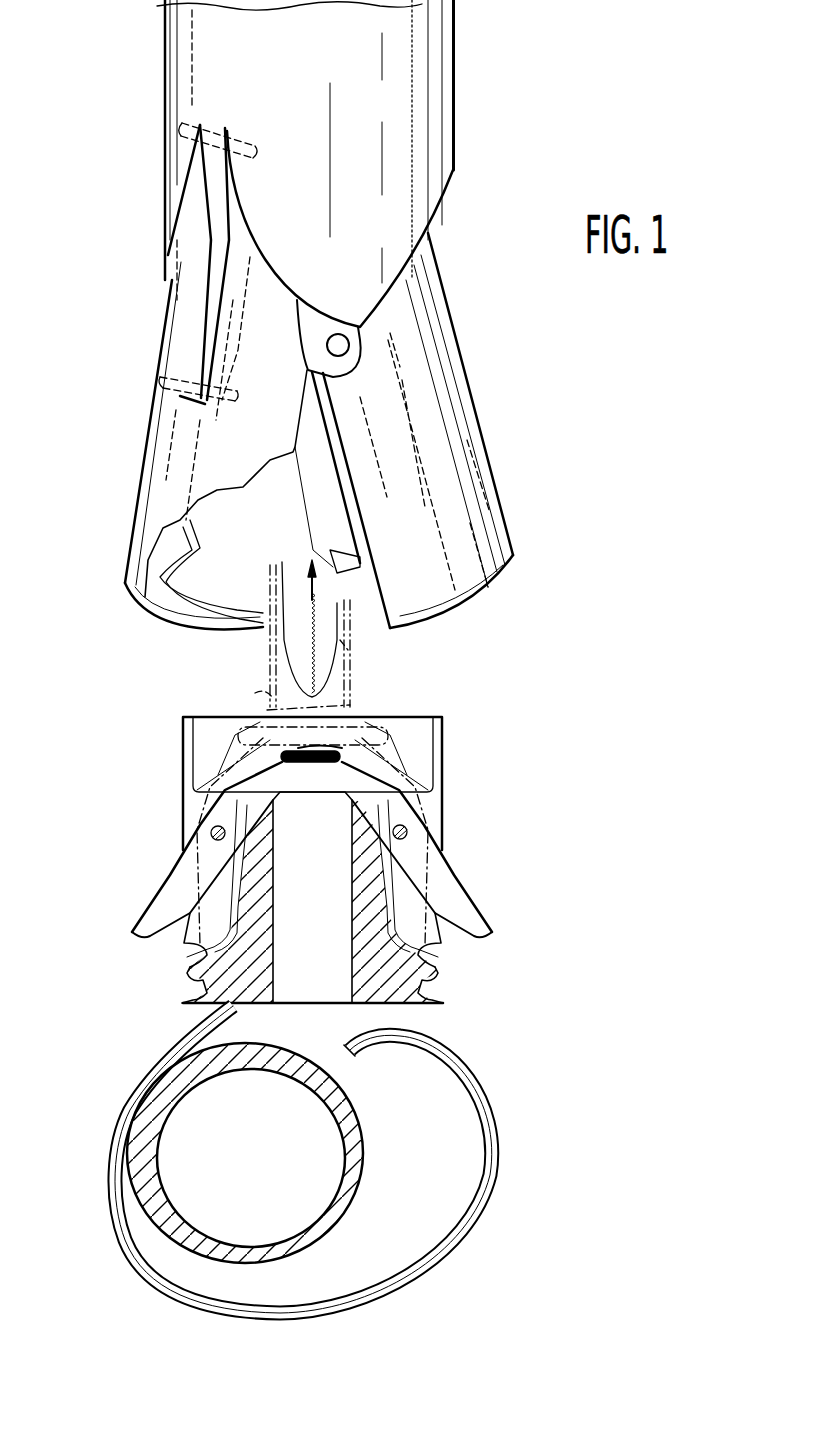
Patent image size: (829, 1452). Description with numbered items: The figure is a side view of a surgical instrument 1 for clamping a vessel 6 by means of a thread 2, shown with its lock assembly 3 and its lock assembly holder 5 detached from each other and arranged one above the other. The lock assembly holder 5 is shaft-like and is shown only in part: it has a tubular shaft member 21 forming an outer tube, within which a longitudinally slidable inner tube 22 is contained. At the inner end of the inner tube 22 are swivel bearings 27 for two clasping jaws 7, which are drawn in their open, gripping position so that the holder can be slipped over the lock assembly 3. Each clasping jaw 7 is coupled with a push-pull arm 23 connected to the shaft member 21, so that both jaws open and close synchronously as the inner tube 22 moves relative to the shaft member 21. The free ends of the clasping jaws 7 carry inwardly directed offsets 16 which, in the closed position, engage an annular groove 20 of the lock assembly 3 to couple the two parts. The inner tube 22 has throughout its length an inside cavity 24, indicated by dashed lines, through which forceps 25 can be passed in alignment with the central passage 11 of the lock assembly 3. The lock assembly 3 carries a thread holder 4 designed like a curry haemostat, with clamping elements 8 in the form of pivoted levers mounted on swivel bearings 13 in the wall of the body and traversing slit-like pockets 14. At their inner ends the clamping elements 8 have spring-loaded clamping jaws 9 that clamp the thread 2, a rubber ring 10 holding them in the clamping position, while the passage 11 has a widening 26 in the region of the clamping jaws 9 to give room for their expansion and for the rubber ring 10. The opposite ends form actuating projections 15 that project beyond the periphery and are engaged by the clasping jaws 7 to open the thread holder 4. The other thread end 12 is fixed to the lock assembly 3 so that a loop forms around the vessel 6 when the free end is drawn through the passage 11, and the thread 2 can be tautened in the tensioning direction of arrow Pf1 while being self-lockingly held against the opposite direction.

The surgical instrument 1 is at (505, 690).
The thread 2 is at (477, 1088).
The lock assembly 3 is at (153, 795).
The thread holder 4 is at (393, 743).
The lock assembly holder 5 is at (125, 272).
The vessel 6 is at (363, 1172).
The clasping jaws 7 is at (473, 467).
The clamping elements 8 is at (435, 798).
The clamping jaws 9 is at (325, 765).
The rubber ring 10 is at (373, 723).
The central passage 11 is at (313, 990).
The other thread end 12 is at (200, 1007).
The swivel bearings 13 is at (210, 832).
The slit-like pockets 14 is at (190, 952).
The actuating projections 15 is at (147, 917).
The offsets 16 is at (345, 548).
The annular groove 20 is at (437, 990).
The tubular shaft member 21 is at (185, 70).
The inner tube 22 is at (267, 658).
The push-pull arms 23 is at (192, 317).
The inside cavity 24 is at (255, 693).
The forceps 25 is at (353, 643).
The widening 26 is at (205, 757).
The swivel bearings 27 is at (338, 333).
The arrow Pf1 is at (320, 593).